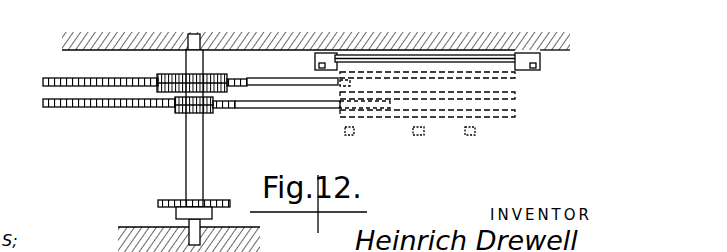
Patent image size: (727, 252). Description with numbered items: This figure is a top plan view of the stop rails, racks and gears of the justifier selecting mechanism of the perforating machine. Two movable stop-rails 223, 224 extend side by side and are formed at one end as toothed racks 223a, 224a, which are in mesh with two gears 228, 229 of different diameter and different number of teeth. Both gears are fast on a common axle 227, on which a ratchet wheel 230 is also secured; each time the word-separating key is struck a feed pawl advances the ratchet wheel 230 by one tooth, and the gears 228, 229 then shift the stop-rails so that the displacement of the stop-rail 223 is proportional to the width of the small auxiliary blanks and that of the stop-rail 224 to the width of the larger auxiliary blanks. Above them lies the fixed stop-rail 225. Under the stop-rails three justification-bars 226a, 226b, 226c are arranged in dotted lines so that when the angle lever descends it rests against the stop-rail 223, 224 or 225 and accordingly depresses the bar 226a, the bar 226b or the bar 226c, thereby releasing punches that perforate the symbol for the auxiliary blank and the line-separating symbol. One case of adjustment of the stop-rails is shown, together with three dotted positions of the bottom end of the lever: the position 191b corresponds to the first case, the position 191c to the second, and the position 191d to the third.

The toothed rack 224a is at (60, 78).
The movable stop-rail 224 is at (278, 86).
The gear 229 is at (207, 81).
The fixed stop-rail 225 is at (418, 61).
The justification-bar 226c is at (515, 75).
The justification-bar 226b is at (515, 96).
The justification-bar 226a is at (515, 117).
The toothed rack 223a is at (93, 110).
The movable stop-rail 223 is at (284, 107).
The gear 228 is at (185, 110).
The common axle 227 is at (188, 157).
The ratchet wheel 230 is at (159, 200).
The position of lever 191 191b is at (353, 135).
The position of lever 191 191c is at (425, 135).
The position of lever 191 191d is at (475, 135).